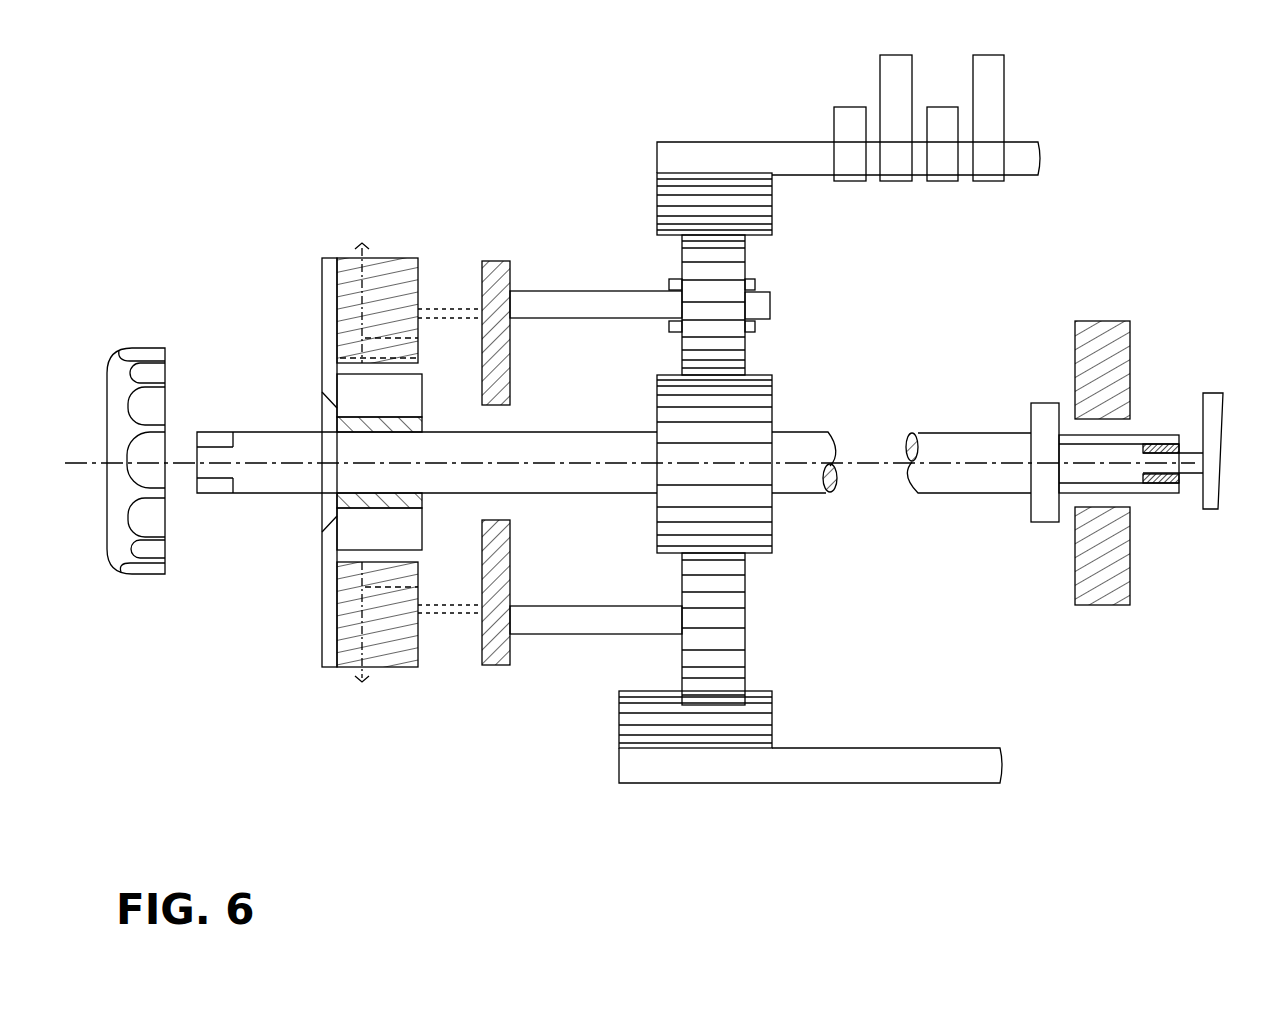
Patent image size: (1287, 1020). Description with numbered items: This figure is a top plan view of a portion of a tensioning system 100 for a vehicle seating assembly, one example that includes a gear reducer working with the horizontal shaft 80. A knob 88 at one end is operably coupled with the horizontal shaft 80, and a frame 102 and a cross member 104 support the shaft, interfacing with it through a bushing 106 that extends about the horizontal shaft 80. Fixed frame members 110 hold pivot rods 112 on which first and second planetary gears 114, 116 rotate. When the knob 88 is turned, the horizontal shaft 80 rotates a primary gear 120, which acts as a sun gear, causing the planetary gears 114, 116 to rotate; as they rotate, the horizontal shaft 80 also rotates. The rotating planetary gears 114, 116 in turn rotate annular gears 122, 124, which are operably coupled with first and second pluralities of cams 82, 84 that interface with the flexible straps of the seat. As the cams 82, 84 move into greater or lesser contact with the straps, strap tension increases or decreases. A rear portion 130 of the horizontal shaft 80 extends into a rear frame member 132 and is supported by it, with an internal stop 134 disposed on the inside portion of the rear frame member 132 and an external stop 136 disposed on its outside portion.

The horizontal shaft 80 is at (268, 440).
The first plurality of cams 82 is at (848, 107).
The second plurality of cams 84 is at (896, 55).
The knob 88 is at (118, 361).
The tensioning system 100 is at (198, 632).
The frame 102 is at (322, 298).
The cross member 104 is at (408, 393).
The bushing 106 is at (337, 497).
The fixed frame members 110 is at (495, 278).
The pivot rods 112 is at (583, 298).
The first planetary gear 114 is at (730, 273).
The second planetary gear 116 is at (735, 640).
The primary gear 120 is at (757, 413).
The annular gear 122 is at (665, 200).
The annular gear 124 is at (760, 720).
The rear portion 130 is at (1180, 529).
The rear frame member 132 is at (1118, 362).
The internal stop 134 is at (1043, 524).
The external stop 136 is at (1215, 420).